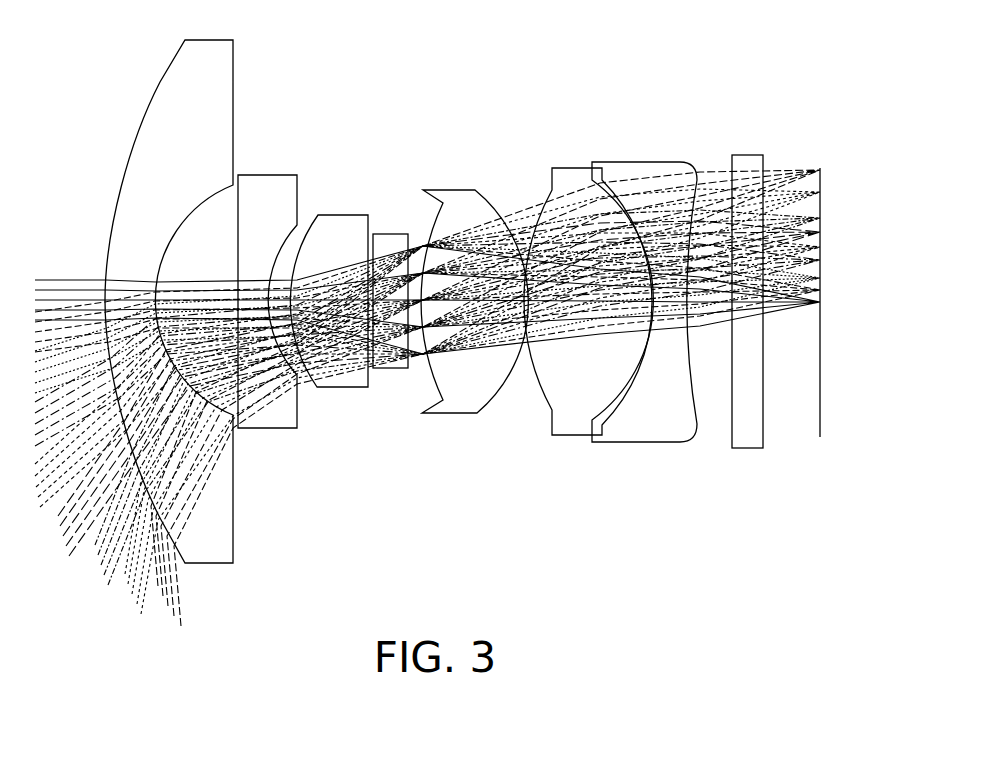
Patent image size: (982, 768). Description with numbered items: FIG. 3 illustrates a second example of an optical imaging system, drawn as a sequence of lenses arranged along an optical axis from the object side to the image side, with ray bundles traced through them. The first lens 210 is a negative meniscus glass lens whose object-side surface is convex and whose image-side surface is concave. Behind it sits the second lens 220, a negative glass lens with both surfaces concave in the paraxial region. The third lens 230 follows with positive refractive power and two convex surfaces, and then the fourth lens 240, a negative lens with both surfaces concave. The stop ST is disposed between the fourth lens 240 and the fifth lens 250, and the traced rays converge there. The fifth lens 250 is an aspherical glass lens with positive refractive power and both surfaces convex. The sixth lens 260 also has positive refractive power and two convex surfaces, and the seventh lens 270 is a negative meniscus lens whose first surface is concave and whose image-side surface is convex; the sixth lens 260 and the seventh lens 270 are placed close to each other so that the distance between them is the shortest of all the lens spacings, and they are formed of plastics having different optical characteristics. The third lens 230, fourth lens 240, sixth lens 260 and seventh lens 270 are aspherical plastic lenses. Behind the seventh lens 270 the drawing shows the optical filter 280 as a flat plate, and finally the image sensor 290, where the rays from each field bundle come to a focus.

The first lens 210 is at (172, 86).
The second lens 220 is at (271, 173).
The third lens 230 is at (335, 227).
The fourth lens 240 is at (390, 240).
The stop ST is at (412, 370).
The fifth lens 250 is at (455, 195).
The sixth lens 260 is at (577, 168).
The seventh lens 270 is at (652, 165).
The optical filter 280 is at (750, 156).
The image sensor 290 is at (820, 168).